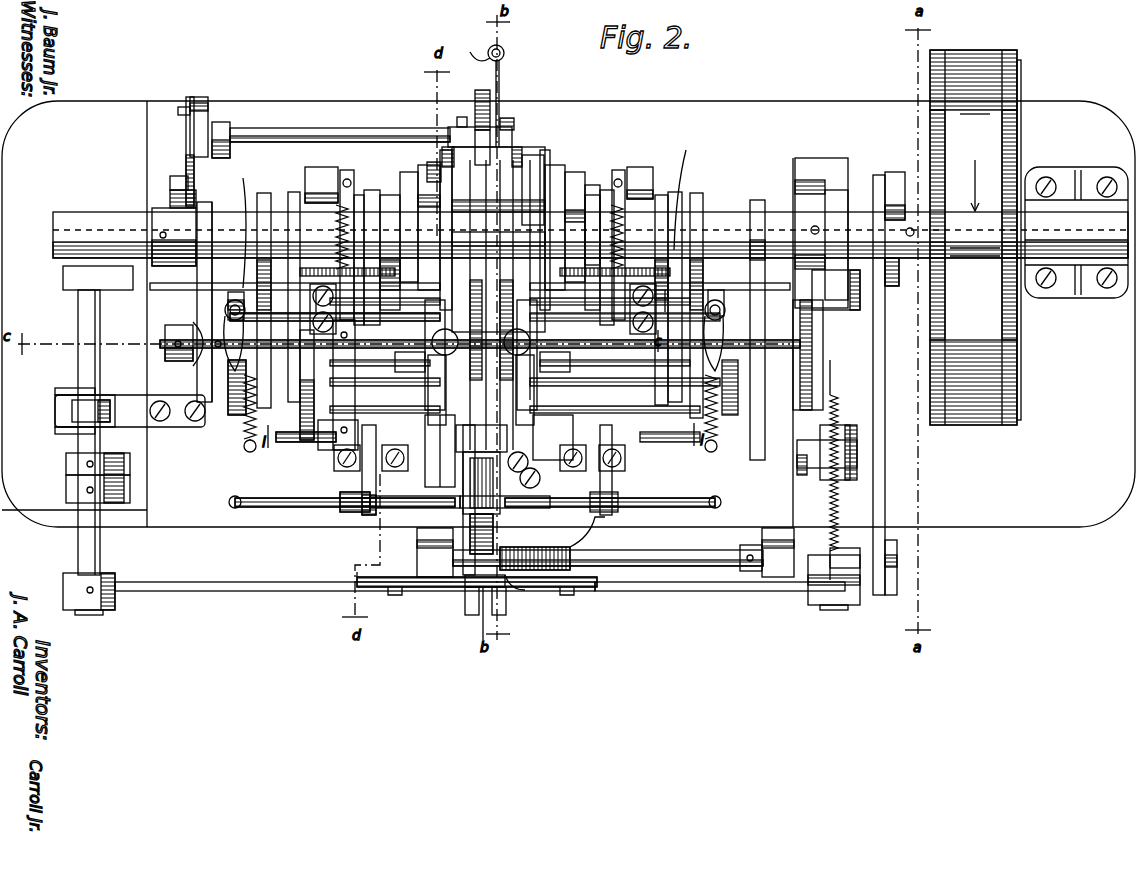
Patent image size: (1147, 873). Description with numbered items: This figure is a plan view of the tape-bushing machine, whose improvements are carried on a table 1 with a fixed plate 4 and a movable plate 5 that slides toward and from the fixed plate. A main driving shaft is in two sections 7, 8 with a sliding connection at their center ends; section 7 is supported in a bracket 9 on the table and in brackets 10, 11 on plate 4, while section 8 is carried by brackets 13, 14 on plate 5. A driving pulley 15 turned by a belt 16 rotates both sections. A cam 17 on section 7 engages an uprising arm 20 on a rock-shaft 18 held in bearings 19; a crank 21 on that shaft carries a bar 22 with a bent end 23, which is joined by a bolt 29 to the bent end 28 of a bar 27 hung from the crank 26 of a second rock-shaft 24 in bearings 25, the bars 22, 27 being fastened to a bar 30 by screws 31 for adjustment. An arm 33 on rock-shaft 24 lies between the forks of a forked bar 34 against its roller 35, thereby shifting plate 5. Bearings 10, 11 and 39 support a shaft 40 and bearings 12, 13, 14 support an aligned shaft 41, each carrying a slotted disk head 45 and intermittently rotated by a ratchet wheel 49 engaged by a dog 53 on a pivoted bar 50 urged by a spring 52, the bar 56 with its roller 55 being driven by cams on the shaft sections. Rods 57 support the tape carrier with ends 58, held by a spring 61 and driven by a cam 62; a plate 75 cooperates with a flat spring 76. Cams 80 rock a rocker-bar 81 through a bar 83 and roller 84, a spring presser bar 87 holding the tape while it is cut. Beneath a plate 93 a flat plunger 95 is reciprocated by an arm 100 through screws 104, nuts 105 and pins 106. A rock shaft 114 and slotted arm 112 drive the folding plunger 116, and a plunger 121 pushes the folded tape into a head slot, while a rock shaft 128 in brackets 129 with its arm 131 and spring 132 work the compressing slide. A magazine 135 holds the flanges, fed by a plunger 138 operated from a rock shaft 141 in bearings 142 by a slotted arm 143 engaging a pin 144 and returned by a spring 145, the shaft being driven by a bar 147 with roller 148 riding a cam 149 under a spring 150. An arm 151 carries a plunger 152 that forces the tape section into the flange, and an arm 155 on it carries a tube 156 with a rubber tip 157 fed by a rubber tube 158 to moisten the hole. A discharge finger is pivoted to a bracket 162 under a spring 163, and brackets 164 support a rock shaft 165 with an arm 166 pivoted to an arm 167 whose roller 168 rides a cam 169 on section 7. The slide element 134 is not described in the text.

The table 1 is at (146, 108).
The plate 4 is at (767, 496).
The movable plate 5 is at (172, 487).
The shaft section 7 is at (743, 212).
The shaft section 8 is at (222, 215).
The bracket 9 is at (1070, 170).
The bracket 10 is at (660, 195).
The bracket 11 is at (540, 460).
The bracket 12 is at (308, 398).
The bracket 13 is at (440, 451).
The bracket 14 is at (209, 292).
The driving pulley 15 is at (1018, 69).
The belt 16 is at (985, 50).
The cam 17 is at (848, 195).
The rock-shaft 18 is at (834, 608).
The bearings 19 is at (797, 475).
The uprising arm 20 is at (843, 310).
The crank 21 is at (810, 604).
The bar 22 is at (662, 591).
The bent end 23 is at (499, 613).
The rock-shaft 24 is at (78, 553).
The bearings 25 is at (98, 379).
The crank 26 is at (63, 593).
The bar 27 is at (222, 591).
The bent end 28 is at (466, 614).
The bolt 29 is at (503, 608).
The bar 30 is at (477, 575).
The screws 31 is at (395, 595).
The arm 33 is at (72, 411).
The forked bar 34 is at (186, 421).
The roller 35 is at (60, 404).
The bearing 39 is at (761, 321).
The shaft 40 is at (808, 355).
The shaft 41 is at (184, 344).
The disk head 45 is at (444, 440).
The ratchet wheel 49 is at (482, 389).
The bar 50 is at (480, 333).
The spring 52 is at (254, 400).
The dog 53 is at (724, 297).
The roller 55 is at (463, 211).
The bar 56 is at (264, 193).
The rods 57 is at (475, 304).
The ends 58 is at (236, 296).
The spring 61 is at (374, 240).
The cam 62 is at (388, 211).
The plate 75 is at (294, 235).
The flat spring 76 is at (475, 309).
The cams 80 is at (408, 172).
The rocker-bar 81 is at (428, 180).
The bar 83 is at (440, 171).
The roller 84 is at (590, 185).
The spring presser bar 87 is at (531, 161).
The plate 93 is at (432, 162).
The flat plunger 95 is at (440, 155).
The arm 100 is at (482, 118).
The screws 104 is at (462, 127).
The nuts 105 is at (446, 147).
The pins 106 is at (518, 147).
The arm 112 is at (485, 390).
The rock shaft 114 is at (525, 395).
The plunger 116 is at (481, 355).
The plunger 121 is at (510, 363).
The rock shaft 128 is at (358, 195).
The brackets 129 is at (484, 171).
The arm 131 is at (345, 170).
The spring 132 is at (485, 237).
The block 134 is at (481, 469).
The magazine 135 is at (463, 540).
The plunger 138 is at (493, 538).
The rock shaft 141 is at (665, 556).
The bearings 142 is at (605, 552).
The arm 143 is at (468, 590).
The pin 144 is at (506, 587).
The spring 145 is at (575, 552).
The bar 147 is at (886, 483).
The roller 148 is at (899, 283).
The cam 149 is at (896, 180).
The spring 150 is at (828, 420).
The arm 151 is at (338, 385).
The plunger 152 is at (280, 442).
The arm 155 is at (362, 478).
The tube 156 is at (348, 512).
The rubber tip 157 is at (390, 510).
The rubber tube 158 is at (475, 510).
The bracket 162 is at (475, 49).
The spring 163 is at (503, 50).
The brackets 164 is at (228, 124).
The rock shaft 165 is at (305, 132).
The arm 166 is at (202, 97).
The arm 167 is at (192, 161).
The roller 168 is at (170, 178).
The cam 169 is at (176, 198).